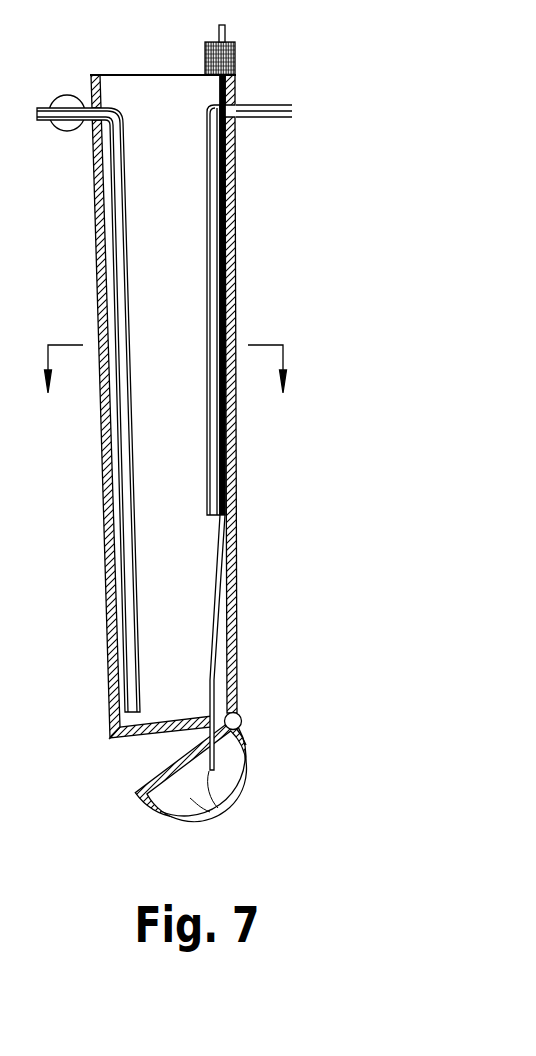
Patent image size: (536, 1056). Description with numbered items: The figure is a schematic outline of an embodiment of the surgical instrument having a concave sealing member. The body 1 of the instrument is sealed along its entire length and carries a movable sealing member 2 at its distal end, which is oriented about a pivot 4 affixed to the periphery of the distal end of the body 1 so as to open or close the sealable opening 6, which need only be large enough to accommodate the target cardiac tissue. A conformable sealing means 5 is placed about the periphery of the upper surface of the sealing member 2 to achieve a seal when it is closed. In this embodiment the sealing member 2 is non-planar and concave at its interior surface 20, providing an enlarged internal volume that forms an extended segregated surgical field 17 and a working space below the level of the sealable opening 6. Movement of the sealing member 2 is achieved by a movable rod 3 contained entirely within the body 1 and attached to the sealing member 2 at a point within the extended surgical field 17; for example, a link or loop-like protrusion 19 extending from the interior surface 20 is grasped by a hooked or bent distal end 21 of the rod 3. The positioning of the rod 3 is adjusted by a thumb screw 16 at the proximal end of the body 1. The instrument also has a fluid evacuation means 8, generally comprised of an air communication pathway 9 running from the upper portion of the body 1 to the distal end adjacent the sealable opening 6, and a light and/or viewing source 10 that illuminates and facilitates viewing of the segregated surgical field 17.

The body of the instrument 1 is at (100, 496).
The sealing member 2 is at (229, 792).
The movable rod 3 is at (215, 612).
The pivot 4 is at (240, 714).
The conformable sealing means 5 is at (152, 733).
The sealable opening 6 is at (137, 774).
The fluid evacuation means 8 is at (167, 389).
The air communication pathway 9 is at (62, 130).
The light and/or viewing source 10 is at (262, 112).
The thumb screw 16 is at (237, 58).
The segregated surgical field 17 is at (192, 798).
The loop-like protrusion 19 is at (218, 808).
The interior surface 20 is at (236, 790).
The bent distal end 21 is at (247, 742).